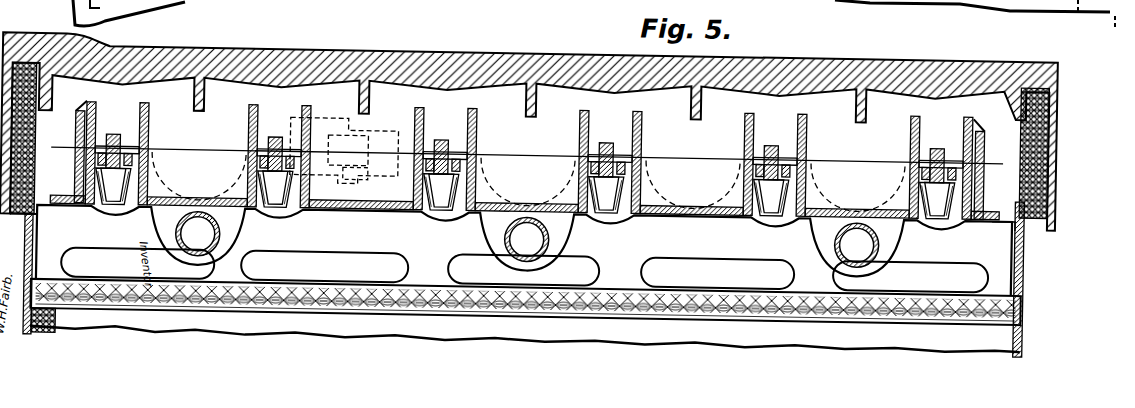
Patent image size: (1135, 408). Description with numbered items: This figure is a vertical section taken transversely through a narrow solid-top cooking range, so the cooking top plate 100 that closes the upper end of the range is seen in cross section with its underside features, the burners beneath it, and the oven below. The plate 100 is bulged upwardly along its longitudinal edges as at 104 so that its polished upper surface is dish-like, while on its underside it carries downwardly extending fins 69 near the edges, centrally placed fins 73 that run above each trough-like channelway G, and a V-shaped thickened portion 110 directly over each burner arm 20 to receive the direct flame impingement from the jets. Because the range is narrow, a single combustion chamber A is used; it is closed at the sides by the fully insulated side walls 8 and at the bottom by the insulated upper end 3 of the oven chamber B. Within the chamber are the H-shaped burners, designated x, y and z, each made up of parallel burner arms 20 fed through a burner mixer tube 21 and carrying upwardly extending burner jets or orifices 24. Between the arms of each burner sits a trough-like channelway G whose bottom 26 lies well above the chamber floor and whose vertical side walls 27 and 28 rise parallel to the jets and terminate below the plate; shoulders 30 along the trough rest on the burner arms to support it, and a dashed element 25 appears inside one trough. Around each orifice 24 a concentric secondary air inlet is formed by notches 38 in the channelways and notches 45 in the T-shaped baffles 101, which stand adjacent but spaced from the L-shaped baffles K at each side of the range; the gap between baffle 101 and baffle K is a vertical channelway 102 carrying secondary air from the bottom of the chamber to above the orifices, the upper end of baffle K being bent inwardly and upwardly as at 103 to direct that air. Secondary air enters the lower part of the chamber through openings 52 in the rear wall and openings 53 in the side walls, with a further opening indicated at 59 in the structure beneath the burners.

The cooking top plate 100 is at (860, 48).
The V-shaped thickened portion 110 is at (178, 45).
The upward bulge 104 is at (42, 32).
The fin 73 is at (206, 94).
The side wall 8 is at (1058, 125).
The fin 69 is at (96, 46).
The shoulder 30 is at (150, 147).
The burner jet or orifice 24 is at (112, 133).
The trough-like channelway G is at (144, 126).
The vertically extending channelway 102 is at (78, 118).
The inwardly and upwardly bent upper end 103 is at (84, 110).
The notch 45 is at (100, 149).
The L-shaped baffle K is at (77, 171).
The T-shaped baffle 101 is at (80, 196).
The bottom of baffle 26 is at (186, 194).
The mechanism 25 is at (372, 113).
The side wall of baffle 27 is at (147, 108).
The side wall of baffle 28 is at (260, 143).
The notch 38 is at (790, 145).
The combustion chamber A is at (542, 100).
The burner arm 20 is at (940, 196).
The burner x is at (152, 233).
The burner y is at (474, 232).
The burner z is at (804, 230).
The burner mixer tube 21 is at (527, 239).
The opening 52 is at (524, 269).
The beam 59 is at (38, 262).
The top or upper end of oven chamber 3 is at (490, 308).
The oven chamber B is at (566, 332).
The opening 53 is at (1028, 255).